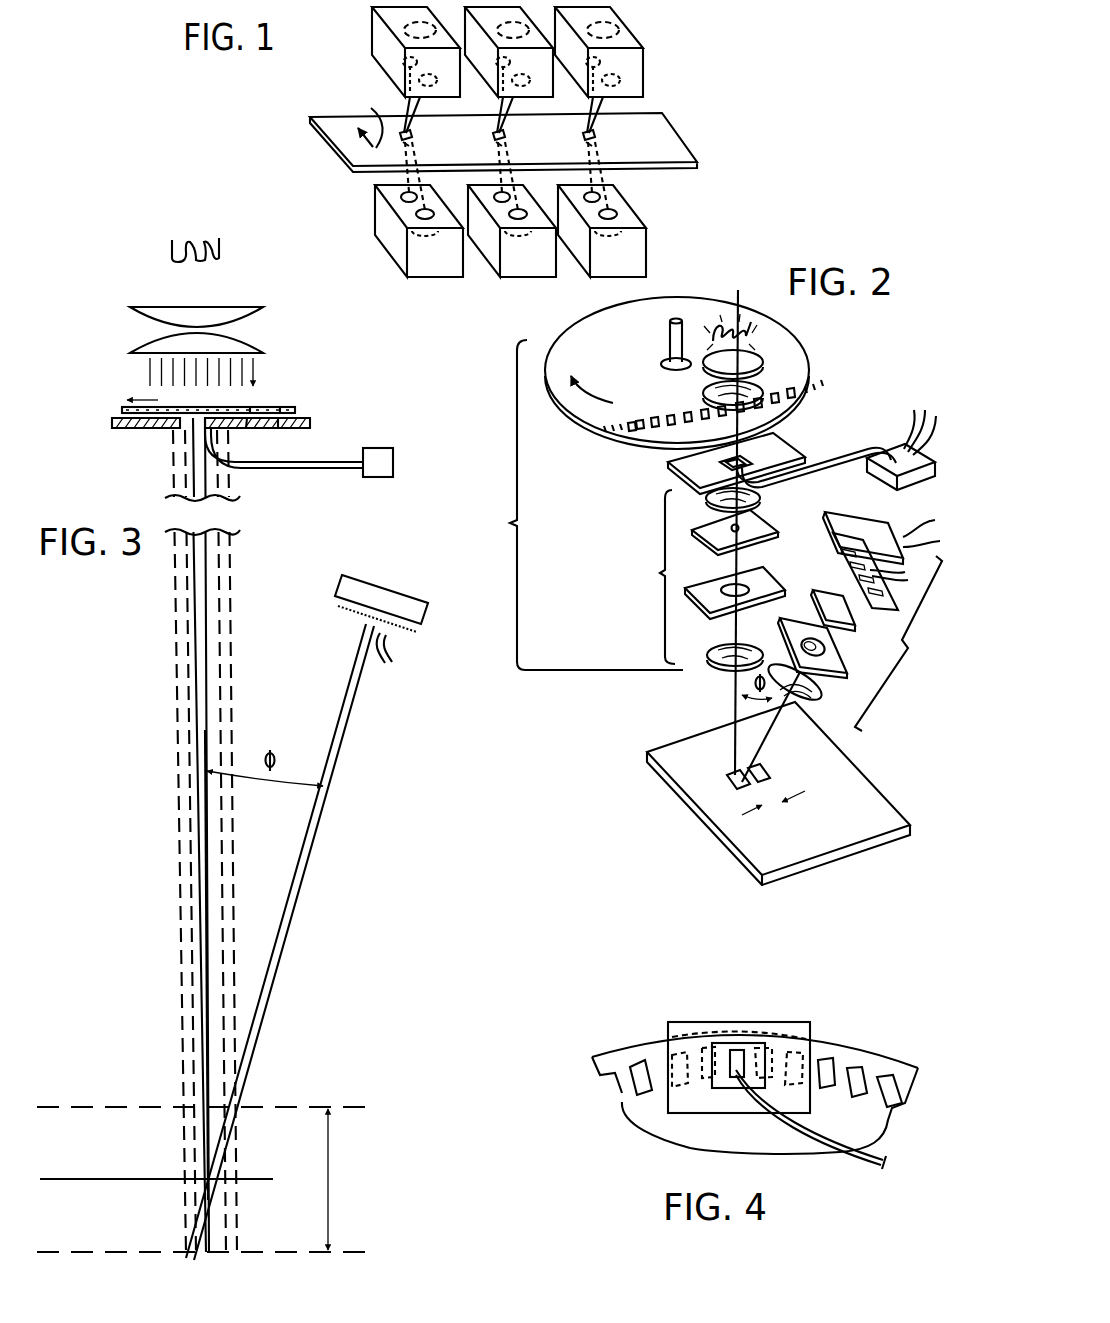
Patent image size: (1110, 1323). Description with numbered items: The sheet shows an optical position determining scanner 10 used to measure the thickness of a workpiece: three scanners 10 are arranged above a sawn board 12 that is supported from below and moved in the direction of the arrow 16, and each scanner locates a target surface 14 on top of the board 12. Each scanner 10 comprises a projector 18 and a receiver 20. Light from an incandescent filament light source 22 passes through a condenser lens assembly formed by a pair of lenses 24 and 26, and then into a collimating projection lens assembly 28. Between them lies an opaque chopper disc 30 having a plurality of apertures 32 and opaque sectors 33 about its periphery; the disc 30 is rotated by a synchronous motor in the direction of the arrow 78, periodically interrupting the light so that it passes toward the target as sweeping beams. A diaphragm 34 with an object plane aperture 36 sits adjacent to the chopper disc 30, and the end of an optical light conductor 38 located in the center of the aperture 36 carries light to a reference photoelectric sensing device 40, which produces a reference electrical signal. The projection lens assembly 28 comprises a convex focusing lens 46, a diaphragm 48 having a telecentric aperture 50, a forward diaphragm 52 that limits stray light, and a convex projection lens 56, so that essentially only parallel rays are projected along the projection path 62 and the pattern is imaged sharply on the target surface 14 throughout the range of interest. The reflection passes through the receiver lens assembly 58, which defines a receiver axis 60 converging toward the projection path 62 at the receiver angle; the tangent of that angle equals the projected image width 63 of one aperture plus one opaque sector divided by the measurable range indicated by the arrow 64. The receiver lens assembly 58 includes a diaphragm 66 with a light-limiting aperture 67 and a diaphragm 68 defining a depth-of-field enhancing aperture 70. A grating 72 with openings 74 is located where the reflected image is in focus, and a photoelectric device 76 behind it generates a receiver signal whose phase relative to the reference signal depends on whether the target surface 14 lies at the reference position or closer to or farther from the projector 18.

In FIG. 1, the optical position determining scanner 10 is at (430, 280).
In FIG. 1, the sawn board 12 is at (682, 134).
In FIG. 1, the target surface 14 is at (597, 132).
In FIG. 2, the target surface 14 is at (675, 770).
In FIG. 3, the target surface 14 is at (95, 1105).
In FIG. 1, the arrow 16 is at (371, 115).
In FIG. 2, the projector 18 is at (584, 505).
In FIG. 2, the receiver 20 is at (898, 643).
In FIG. 2, the incandescent filament light source 22 is at (737, 360).
In FIG. 3, the incandescent filament light source 22 is at (224, 248).
In FIG. 2, the lens 24 is at (756, 358).
In FIG. 3, the lens 24 is at (152, 305).
In FIG. 2, the lens 26 is at (710, 388).
In FIG. 3, the lens 26 is at (250, 345).
In FIG. 2, the collimating projection lens assembly 28 is at (653, 577).
In FIG. 2, the chopper disc 30 is at (585, 420).
In FIG. 3, the chopper disc 30 is at (300, 407).
In FIG. 4, the chopper disc 30 is at (618, 1050).
In FIG. 2, the apertures 32 is at (693, 425).
In FIG. 3, the apertures 32 is at (281, 407).
In FIG. 4, the apertures 32 is at (828, 1060).
In FIG. 2, the opaque sectors 33 is at (672, 445).
In FIG. 3, the opaque sectors 33 is at (250, 406).
In FIG. 4, the opaque sectors 33 is at (878, 1070).
In FIG. 2, the diaphragm 34 is at (790, 447).
In FIG. 3, the diaphragm 34 is at (305, 428).
In FIG. 4, the diaphragm 34 is at (695, 1022).
In FIG. 2, the object plane aperture 36 is at (688, 470).
In FIG. 3, the object plane aperture 36 is at (183, 442).
In FIG. 4, the object plane aperture 36 is at (750, 1043).
In FIG. 2, the optical light conductor 38 is at (862, 445).
In FIG. 3, the optical light conductor 38 is at (297, 469).
In FIG. 4, the optical light conductor 38 is at (838, 1157).
In FIG. 2, the reference photoelectric sensing device 40 is at (890, 447).
In FIG. 3, the reference photoelectric sensing device 40 is at (380, 478).
In FIG. 2, the convex focusing lens 46 is at (760, 497).
In FIG. 2, the diaphragm 48 is at (705, 528).
In FIG. 2, the telecentric aperture 50 is at (714, 545).
In FIG. 2, the forward diaphragm 52 is at (690, 598).
In FIG. 2, the convex projection lens 56 is at (722, 648).
In FIG. 2, the receiver lens assembly 58 is at (824, 681).
In FIG. 2, the receiver axis 60 is at (788, 710).
In FIG. 3, the receiver axis 60 is at (340, 748).
In FIG. 2, the projection path 62 is at (740, 568).
In FIG. 3, the projection path 62 is at (205, 876).
In FIG. 2, the projected image width 63 is at (792, 797).
In FIG. 3, the arrow 64 is at (328, 1153).
In FIG. 2, the diaphragm 66 is at (785, 628).
In FIG. 2, the light-limiting aperture 67 is at (822, 652).
In FIG. 2, the diaphragm 68 is at (822, 590).
In FIG. 2, the depth-of-field enhancing aperture 70 is at (870, 617).
In FIG. 2, the grating 72 is at (840, 560).
In FIG. 3, the grating 72 is at (341, 618).
In FIG. 2, the openings 74 is at (882, 577).
In FIG. 3, the openings 74 is at (387, 661).
In FIG. 2, the photoelectric device 76 is at (880, 525).
In FIG. 3, the photoelectric device 76 is at (410, 598).
In FIG. 3, the arrow 78 is at (155, 400).